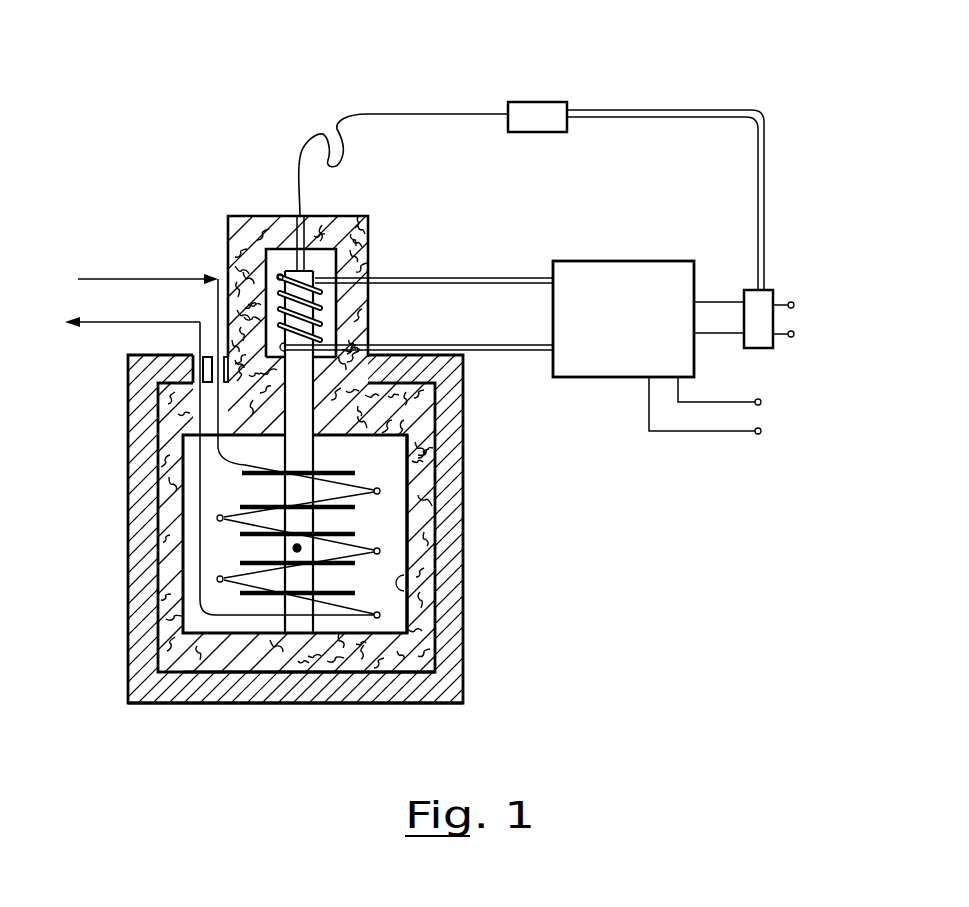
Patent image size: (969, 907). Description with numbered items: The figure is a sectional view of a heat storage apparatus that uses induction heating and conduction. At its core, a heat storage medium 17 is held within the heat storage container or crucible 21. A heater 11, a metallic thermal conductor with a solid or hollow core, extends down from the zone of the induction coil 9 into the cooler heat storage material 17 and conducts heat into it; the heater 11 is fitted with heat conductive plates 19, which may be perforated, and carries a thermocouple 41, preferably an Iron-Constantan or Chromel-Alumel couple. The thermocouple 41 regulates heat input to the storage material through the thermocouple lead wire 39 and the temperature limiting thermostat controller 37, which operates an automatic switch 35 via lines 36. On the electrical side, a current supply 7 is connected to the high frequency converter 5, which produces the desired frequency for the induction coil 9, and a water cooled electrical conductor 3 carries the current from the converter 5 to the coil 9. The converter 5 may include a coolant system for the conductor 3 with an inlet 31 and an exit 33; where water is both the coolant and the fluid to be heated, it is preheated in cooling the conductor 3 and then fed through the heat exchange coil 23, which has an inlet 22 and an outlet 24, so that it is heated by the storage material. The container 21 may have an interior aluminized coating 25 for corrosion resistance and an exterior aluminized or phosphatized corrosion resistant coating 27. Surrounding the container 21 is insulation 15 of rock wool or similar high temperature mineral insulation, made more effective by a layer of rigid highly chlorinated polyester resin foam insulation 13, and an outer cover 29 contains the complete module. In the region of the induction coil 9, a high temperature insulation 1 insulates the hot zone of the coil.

The high temperature insulation 1 is at (358, 216).
The water cooled electrical conductor 3 is at (378, 278).
The high frequency converter 5 is at (638, 261).
The current supply 7 is at (794, 305).
The induction coil 9 is at (322, 322).
The heater 11 is at (293, 622).
The rigid highly chlorinated polyester resin foam insulation 13 is at (445, 412).
The insulation 15 is at (430, 442).
The heat storage medium 17 is at (385, 473).
The heat conductive plates 19 is at (375, 508).
The heat storage container 21 is at (410, 514).
The inlet 22 is at (78, 279).
The heat exchange coil 23 is at (405, 549).
The outlet 24 is at (92, 325).
The interior aluminized coating 25 is at (404, 583).
The exterior aluminized or phosphatized corrosion resistant coating 27 is at (390, 658).
The outer cover 29 is at (442, 705).
The inlet 31 is at (737, 395).
The exit 33 is at (723, 411).
The automatic switch 35 is at (772, 290).
The lines 36 is at (766, 118).
The temperature limiting thermostat controller 37 is at (540, 102).
The thermocouple lead wire 39 is at (427, 114).
The thermocouple 41 is at (293, 548).